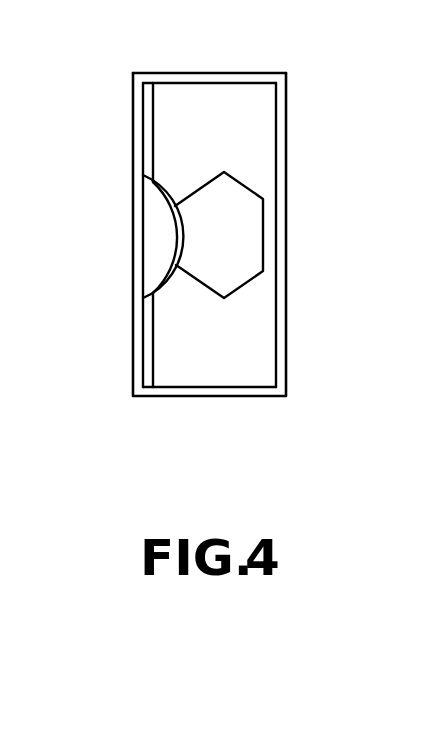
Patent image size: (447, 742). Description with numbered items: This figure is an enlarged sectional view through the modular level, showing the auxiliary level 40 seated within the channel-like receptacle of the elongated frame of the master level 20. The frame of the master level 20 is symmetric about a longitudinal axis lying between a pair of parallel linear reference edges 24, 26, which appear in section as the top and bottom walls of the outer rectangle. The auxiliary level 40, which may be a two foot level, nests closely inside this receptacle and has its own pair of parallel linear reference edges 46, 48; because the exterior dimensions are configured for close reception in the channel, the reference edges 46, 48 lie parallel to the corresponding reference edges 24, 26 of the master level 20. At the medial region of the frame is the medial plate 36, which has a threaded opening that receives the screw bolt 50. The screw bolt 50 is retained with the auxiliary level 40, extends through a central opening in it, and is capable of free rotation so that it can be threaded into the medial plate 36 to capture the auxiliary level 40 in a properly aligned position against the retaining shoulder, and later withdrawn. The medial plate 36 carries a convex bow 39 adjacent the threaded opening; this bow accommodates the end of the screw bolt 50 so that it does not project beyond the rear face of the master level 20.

The master level 20 is at (150, 399).
The reference edge 24 is at (198, 78).
The reference edge 26 is at (257, 387).
The medial plate 36 is at (155, 184).
The convex bow 39 is at (150, 273).
The auxiliary level 40 is at (298, 138).
The reference edge 46 is at (248, 72).
The reference edge 48 is at (212, 376).
The screw bolt 50 is at (163, 228).